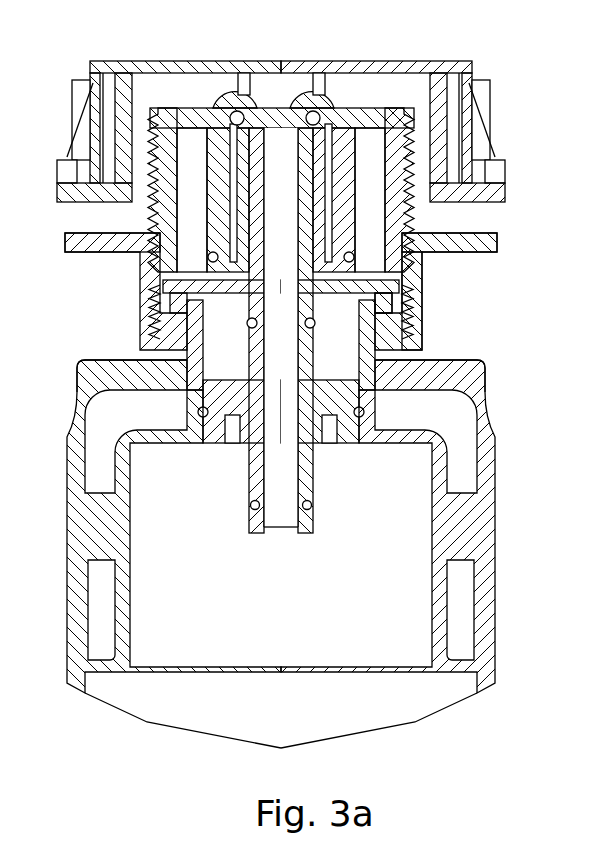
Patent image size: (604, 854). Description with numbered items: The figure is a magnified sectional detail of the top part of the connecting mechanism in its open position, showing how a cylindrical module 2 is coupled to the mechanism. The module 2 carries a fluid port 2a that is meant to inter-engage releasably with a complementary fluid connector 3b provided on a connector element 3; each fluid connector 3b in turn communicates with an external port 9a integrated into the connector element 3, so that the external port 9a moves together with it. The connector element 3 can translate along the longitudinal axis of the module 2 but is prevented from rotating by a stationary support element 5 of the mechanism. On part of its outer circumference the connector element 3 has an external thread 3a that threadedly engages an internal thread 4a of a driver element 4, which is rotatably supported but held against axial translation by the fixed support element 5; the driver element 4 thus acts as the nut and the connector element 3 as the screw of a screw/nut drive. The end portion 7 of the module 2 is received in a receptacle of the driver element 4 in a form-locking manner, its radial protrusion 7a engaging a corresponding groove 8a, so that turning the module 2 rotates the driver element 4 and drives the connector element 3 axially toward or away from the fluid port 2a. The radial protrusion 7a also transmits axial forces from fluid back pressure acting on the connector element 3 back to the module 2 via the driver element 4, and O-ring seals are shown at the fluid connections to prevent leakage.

The module 2 is at (460, 390).
The fluid port 2a is at (475, 388).
The connector element 3 is at (390, 233).
The external thread 3a is at (425, 268).
The fluid connector 3b is at (372, 152).
The driver element 4 is at (423, 300).
The internal thread 4a is at (425, 290).
The support element 5 is at (487, 197).
The portion of the module 7 is at (157, 322).
The radial protrusion 7a is at (418, 325).
The groove 8a is at (157, 282).
The external port 9a is at (307, 100).